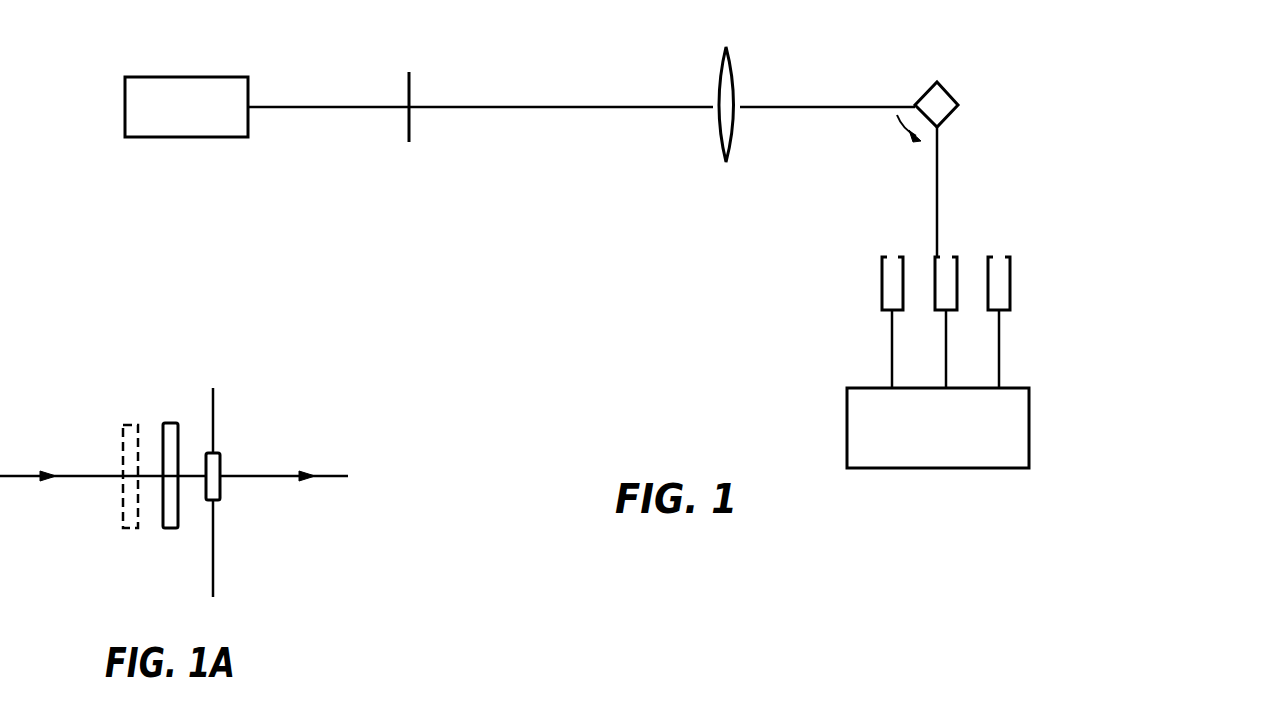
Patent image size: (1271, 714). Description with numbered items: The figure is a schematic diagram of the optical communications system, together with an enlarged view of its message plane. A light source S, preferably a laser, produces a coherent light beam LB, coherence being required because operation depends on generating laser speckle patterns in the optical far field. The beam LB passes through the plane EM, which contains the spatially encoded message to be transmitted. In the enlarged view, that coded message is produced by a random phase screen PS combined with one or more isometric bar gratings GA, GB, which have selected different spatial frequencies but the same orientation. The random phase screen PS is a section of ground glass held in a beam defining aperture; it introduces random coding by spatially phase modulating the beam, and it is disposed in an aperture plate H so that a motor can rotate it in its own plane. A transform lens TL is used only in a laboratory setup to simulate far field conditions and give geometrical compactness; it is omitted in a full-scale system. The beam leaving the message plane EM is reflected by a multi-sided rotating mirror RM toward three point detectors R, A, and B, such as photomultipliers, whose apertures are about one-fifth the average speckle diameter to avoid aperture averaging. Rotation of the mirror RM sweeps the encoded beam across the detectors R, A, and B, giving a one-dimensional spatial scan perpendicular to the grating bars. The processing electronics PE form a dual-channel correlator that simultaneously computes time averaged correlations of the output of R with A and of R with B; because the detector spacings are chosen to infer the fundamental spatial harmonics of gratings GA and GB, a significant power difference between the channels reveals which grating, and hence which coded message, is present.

In FIG. 1, the light source S is at (207, 82).
In FIG. 1, the light beam LB is at (343, 106).
In FIG. 1, the spatially encoded message plane EM is at (411, 100).
In FIG. 1, the transform lens TL is at (719, 70).
In FIG. 1, the multi-sided rotating mirror RM is at (952, 95).
In FIG. 1, the point detector R is at (881, 313).
In FIG. 1, the point detector A is at (937, 313).
In FIG. 1, the point detector B is at (1105, 313).
In FIG. 1, the processing electronics PE is at (847, 430).
In FIG. 1A, the isometric bar grating GA is at (170, 423).
In FIG. 1A, the isometric bar grating GB is at (125, 512).
In FIG. 1A, the aperture plate H is at (215, 418).
In FIG. 1A, the random phase screen PS is at (220, 467).